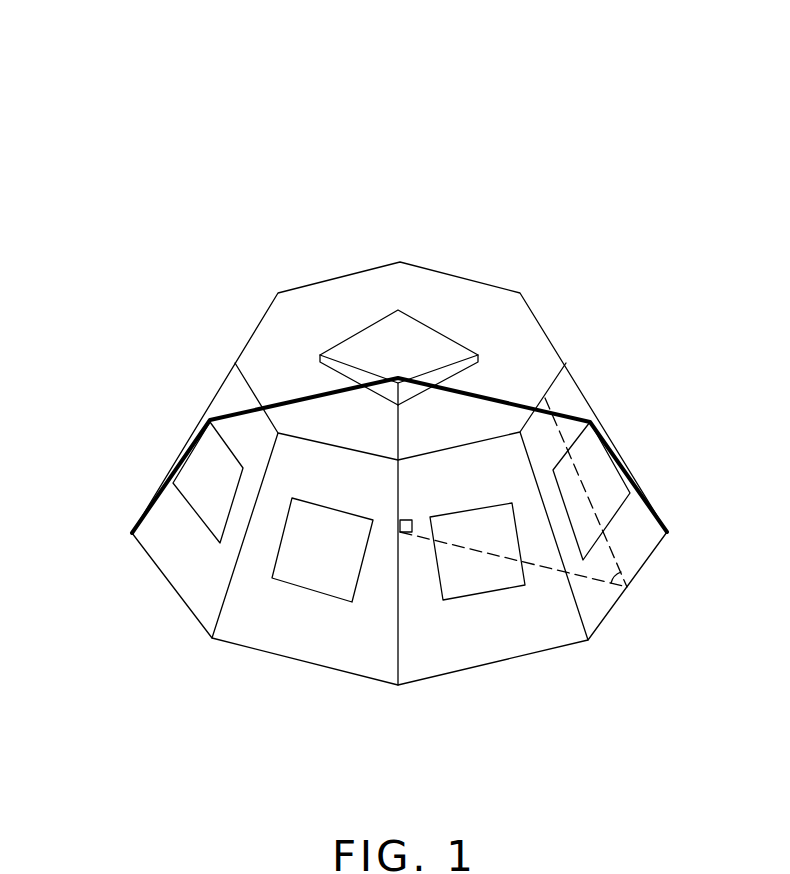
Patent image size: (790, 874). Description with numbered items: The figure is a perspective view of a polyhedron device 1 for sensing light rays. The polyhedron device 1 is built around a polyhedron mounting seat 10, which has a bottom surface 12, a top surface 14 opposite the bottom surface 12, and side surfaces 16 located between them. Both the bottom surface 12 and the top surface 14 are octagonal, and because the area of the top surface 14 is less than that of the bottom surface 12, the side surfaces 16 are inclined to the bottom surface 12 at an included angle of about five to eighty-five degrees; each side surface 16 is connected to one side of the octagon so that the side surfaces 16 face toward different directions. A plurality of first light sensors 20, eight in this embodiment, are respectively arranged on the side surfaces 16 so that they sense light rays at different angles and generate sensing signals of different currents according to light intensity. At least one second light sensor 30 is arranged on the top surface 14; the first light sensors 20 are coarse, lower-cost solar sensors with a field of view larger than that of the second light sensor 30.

The polyhedron device 1 is at (128, 110).
The polyhedron mounting seat 10 is at (218, 380).
The bottom surface 12 is at (637, 522).
The top surface 14 is at (487, 305).
The side surfaces 16 is at (350, 653).
The first light sensors 20 is at (195, 488).
The second light sensor 30 is at (407, 322).